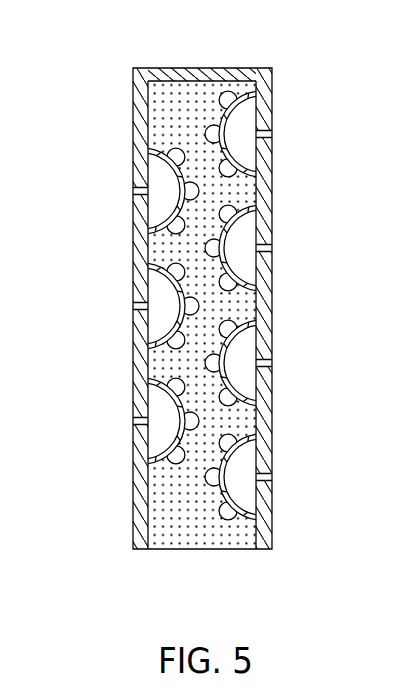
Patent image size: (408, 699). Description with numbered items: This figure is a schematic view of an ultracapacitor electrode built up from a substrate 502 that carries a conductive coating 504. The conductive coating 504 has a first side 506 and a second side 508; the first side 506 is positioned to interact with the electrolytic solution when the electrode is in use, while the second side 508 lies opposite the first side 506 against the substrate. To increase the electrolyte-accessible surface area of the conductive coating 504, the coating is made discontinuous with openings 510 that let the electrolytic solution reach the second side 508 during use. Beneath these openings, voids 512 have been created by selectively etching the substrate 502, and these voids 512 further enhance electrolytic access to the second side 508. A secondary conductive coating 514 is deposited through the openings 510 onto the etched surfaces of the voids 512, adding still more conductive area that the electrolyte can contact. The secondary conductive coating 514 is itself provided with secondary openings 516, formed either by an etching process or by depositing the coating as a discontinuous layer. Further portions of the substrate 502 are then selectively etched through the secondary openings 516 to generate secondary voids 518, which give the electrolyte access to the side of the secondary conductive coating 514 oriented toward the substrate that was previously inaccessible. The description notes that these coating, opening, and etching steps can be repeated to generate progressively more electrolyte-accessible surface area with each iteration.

The substrate 502 is at (172, 530).
The conductive coating 504 is at (202, 308).
The first side 506 is at (149, 276).
The second side 508 is at (257, 533).
The openings 510 is at (259, 136).
The voids 512 is at (251, 113).
The secondary conductive coating 514 is at (219, 266).
The secondary openings 516 is at (222, 95).
The secondary voids 518 is at (208, 130).